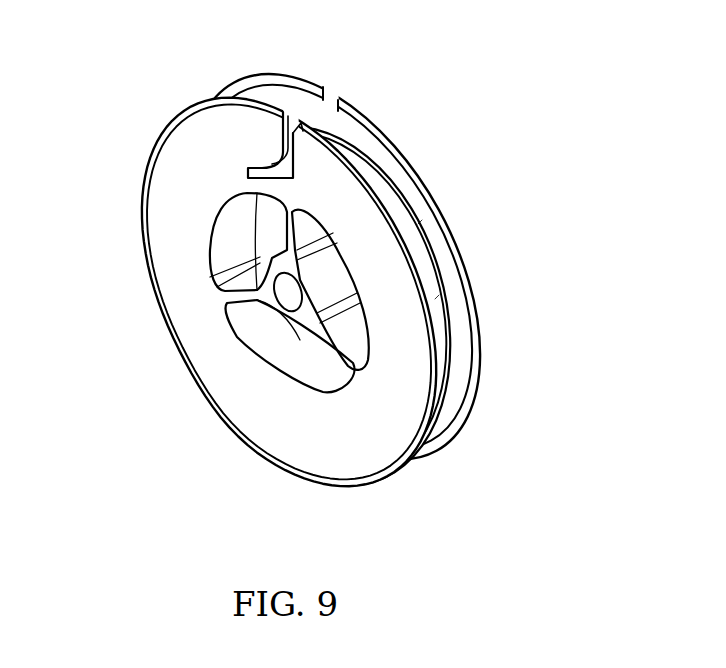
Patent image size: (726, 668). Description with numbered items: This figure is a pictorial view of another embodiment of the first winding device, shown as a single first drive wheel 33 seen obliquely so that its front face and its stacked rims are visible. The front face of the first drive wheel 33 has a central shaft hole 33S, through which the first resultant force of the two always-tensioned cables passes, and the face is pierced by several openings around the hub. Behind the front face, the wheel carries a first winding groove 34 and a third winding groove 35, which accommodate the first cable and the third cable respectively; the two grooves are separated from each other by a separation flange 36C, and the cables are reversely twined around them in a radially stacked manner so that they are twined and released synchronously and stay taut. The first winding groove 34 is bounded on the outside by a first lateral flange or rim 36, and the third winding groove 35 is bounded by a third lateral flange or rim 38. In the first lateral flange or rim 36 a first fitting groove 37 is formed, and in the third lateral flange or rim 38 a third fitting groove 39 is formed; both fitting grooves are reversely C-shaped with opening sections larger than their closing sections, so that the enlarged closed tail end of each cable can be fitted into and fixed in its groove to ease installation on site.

The first drive wheel 33 is at (343, 260).
The shaft hole 33S is at (280, 292).
The first winding groove 34 is at (437, 297).
The third winding groove 35 is at (443, 250).
The first lateral flange or rim 36 is at (196, 113).
The separation flange 36C is at (420, 221).
The first fitting groove 37 is at (290, 128).
The third lateral flange or rim 38 is at (415, 167).
The third fitting groove 39 is at (333, 103).